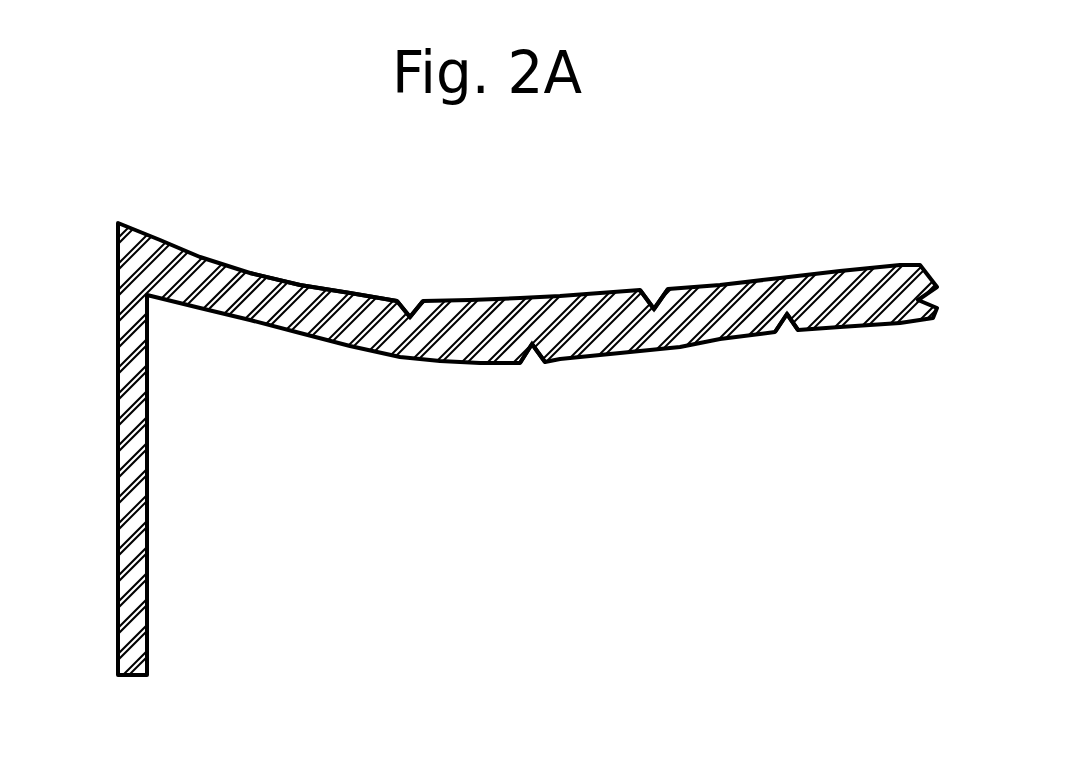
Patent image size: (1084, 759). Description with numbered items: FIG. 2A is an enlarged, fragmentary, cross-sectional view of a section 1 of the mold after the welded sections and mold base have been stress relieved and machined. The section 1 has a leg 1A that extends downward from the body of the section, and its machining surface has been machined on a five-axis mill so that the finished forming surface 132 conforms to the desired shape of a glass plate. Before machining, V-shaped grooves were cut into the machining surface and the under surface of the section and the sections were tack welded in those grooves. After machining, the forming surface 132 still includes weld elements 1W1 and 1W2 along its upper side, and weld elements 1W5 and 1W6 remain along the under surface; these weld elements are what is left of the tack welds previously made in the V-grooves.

The section 1 is at (158, 532).
The leg 1A is at (116, 543).
The forming surface 132 is at (347, 290).
The weld element 1W1 is at (413, 300).
The weld element 1W2 is at (657, 290).
The weld element 1W5 is at (531, 363).
The weld element 1W6 is at (787, 331).